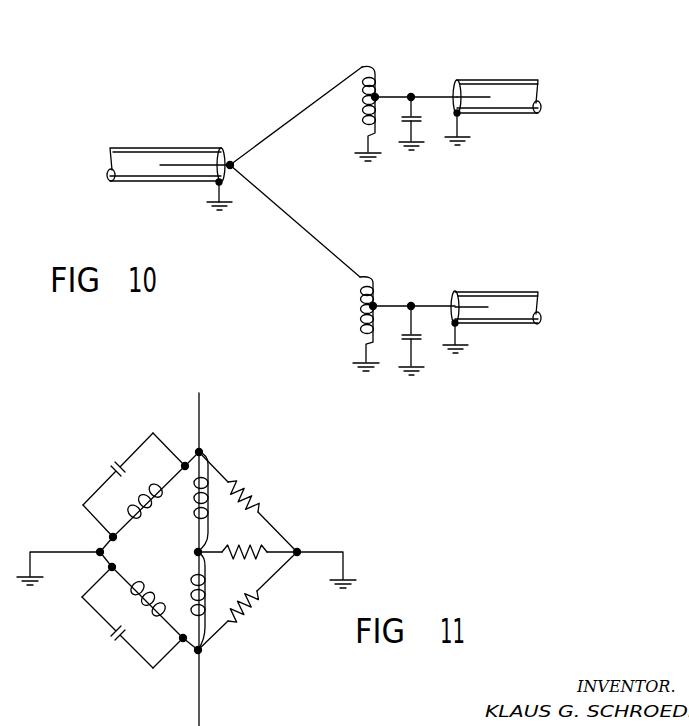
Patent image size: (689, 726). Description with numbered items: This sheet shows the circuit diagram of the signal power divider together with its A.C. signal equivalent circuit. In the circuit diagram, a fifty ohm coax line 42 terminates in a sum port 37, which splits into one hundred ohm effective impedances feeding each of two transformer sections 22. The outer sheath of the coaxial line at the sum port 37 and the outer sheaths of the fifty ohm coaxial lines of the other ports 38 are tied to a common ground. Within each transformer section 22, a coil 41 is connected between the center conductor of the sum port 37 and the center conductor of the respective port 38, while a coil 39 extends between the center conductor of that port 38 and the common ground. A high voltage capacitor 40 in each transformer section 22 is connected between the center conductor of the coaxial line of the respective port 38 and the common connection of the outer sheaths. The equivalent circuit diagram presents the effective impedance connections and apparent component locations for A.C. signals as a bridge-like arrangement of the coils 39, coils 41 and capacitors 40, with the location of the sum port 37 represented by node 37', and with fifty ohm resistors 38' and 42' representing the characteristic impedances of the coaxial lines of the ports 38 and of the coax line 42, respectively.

In FIG. 10, the transformer section 22 is at (383, 64).
In FIG. 10, the sum port 37 is at (227, 141).
In FIG. 10, the port 38 is at (487, 199).
In FIG. 10, the coil 39 is at (362, 124).
In FIG. 11, the coil 39 is at (135, 503).
In FIG. 10, the high voltage capacitor 40 is at (419, 121).
In FIG. 11, the high voltage capacitor 40 is at (118, 461).
In FIG. 10, the coil 41 is at (377, 84).
In FIG. 11, the coil 41 is at (190, 508).
In FIG. 10, the coax line 42 is at (169, 165).
In FIG. 11, the sum port location 37' is at (218, 535).
In FIG. 11, the resistor 38' is at (247, 551).
In FIG. 11, the resistor 42' is at (247, 564).